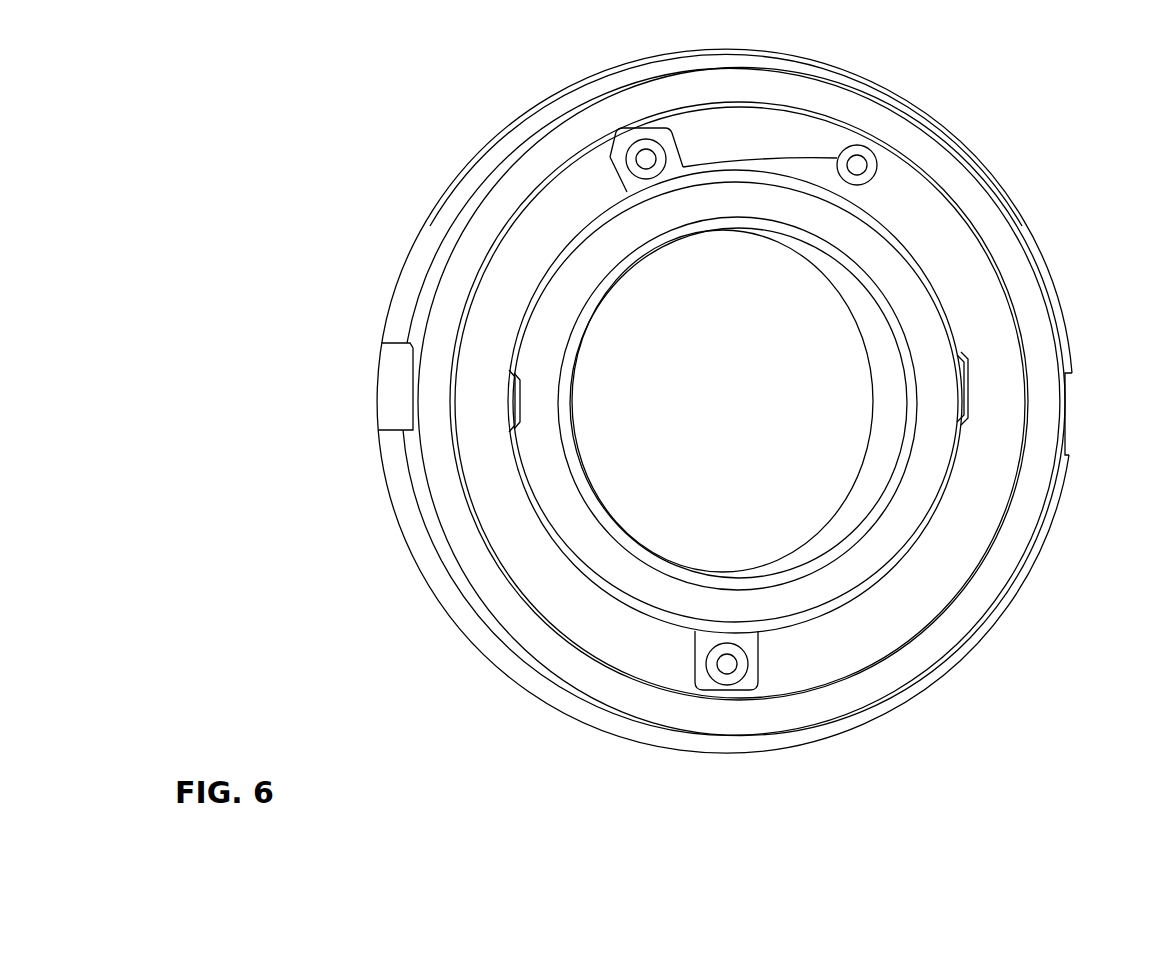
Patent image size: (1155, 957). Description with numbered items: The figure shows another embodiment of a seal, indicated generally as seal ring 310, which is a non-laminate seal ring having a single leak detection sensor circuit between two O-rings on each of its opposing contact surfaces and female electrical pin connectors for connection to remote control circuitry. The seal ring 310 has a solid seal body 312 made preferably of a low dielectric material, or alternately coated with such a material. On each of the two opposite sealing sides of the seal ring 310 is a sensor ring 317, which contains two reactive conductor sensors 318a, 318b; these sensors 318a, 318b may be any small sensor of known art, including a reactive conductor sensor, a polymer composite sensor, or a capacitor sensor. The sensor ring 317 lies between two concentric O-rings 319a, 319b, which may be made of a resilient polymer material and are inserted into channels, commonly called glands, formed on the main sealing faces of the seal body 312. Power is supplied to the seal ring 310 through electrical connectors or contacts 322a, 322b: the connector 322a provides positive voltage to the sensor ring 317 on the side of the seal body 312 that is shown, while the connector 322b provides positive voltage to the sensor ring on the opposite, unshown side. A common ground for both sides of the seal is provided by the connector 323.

The seal 310 is at (422, 140).
The seal body 312 is at (437, 222).
The sensor ring 317 is at (553, 547).
The reactive conductor sensor 318a is at (512, 402).
The reactive conductor sensor 318b is at (967, 405).
The O-ring 319a is at (548, 350).
The O-ring 319b is at (458, 293).
The electrical connector 322a is at (640, 148).
The electrical connector 322b is at (862, 152).
The connector 323 is at (742, 667).